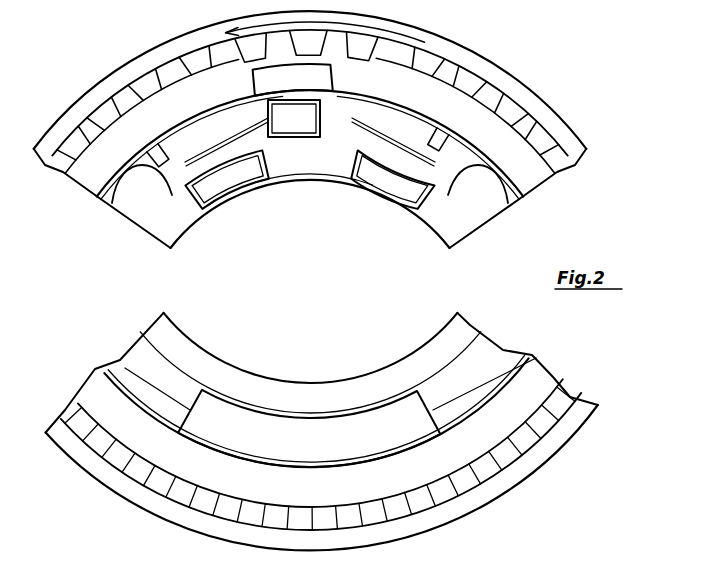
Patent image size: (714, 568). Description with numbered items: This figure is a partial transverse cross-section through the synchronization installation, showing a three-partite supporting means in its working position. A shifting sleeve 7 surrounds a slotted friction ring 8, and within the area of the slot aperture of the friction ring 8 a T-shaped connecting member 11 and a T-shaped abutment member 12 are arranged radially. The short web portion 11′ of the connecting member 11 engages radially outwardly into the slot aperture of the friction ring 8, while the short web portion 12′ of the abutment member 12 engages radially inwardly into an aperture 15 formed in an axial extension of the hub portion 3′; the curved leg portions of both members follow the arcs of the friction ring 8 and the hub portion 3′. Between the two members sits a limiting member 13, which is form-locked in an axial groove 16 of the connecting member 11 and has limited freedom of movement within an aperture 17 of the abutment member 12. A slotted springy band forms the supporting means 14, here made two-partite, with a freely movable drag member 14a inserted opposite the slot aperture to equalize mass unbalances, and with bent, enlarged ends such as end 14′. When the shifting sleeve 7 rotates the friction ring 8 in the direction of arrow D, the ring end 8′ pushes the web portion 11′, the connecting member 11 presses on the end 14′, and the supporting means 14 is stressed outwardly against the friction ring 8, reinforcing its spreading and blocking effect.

The shifting sleeve 7 is at (567, 140).
The friction ring 8 is at (120, 145).
The end of friction ring 8′ is at (350, 78).
The connecting member 11 is at (503, 147).
The web portion of connecting member 11′ is at (273, 80).
The abutment member 12 is at (410, 158).
The web portion of abutment member 12′ is at (330, 128).
The limiting member 13 is at (282, 125).
The supporting means 14 is at (120, 377).
The end of supporting means 14′ is at (155, 175).
The drag or entrainment member 14a is at (340, 455).
The aperture 15 is at (298, 183).
The axial groove 16 is at (400, 62).
The aperture of abutment member 17 is at (340, 165).
The hub portion 3′ is at (170, 338).
The direction of rotation D is at (315, 21).